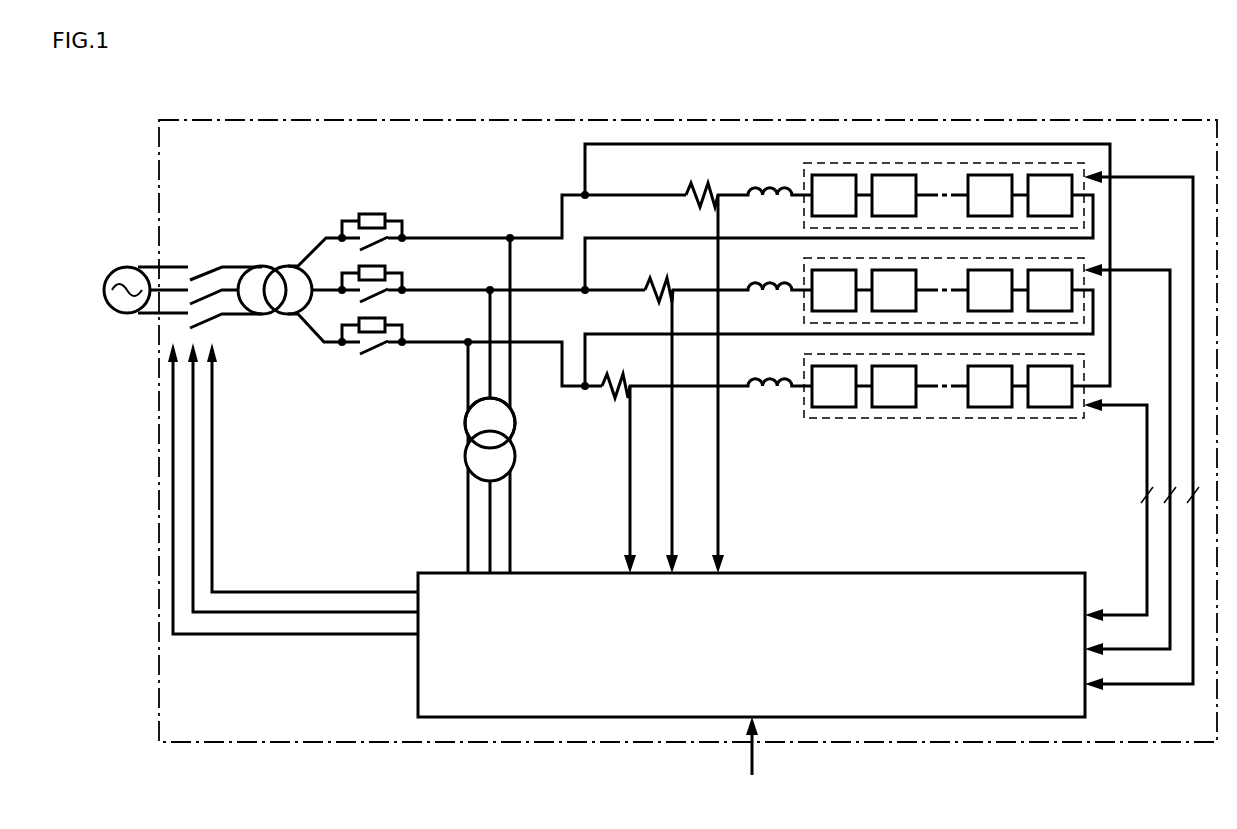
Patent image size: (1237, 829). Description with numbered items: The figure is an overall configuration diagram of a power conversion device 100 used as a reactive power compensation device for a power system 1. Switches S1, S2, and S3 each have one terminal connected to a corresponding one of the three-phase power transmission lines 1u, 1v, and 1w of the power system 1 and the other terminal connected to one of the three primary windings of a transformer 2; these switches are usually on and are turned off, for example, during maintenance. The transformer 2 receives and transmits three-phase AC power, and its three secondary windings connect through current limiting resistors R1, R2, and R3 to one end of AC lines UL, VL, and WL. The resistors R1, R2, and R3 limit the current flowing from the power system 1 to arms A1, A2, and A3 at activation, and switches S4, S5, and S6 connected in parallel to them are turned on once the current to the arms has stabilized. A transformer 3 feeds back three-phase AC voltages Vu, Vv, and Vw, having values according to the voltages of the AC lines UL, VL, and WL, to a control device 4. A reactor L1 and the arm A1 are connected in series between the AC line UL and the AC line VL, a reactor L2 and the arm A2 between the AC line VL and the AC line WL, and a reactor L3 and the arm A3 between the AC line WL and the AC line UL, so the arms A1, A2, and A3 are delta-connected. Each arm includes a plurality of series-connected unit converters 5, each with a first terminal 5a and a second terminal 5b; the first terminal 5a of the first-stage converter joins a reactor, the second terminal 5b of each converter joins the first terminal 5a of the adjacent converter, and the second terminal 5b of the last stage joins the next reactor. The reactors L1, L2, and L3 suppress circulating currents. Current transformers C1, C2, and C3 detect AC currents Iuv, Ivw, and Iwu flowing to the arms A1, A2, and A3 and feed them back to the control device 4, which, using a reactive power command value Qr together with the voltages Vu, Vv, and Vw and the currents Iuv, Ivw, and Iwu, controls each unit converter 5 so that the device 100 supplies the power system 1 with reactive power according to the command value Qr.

The power conversion device 100 is at (1114, 120).
The power system 1 is at (115, 270).
The three-phase power transmission line 1u is at (177, 267).
The three-phase power transmission line 1v is at (158, 293).
The three-phase power transmission line 1w is at (177, 315).
The switch S1 is at (204, 274).
The switch S2 is at (205, 300).
The switch S3 is at (212, 320).
The transformer 2 is at (258, 317).
The current limiting resistor R1 is at (372, 214).
The current limiting resistor R2 is at (359, 271).
The current limiting resistor R3 is at (359, 326).
The switch S4 is at (374, 245).
The switch S5 is at (374, 297).
The switch S6 is at (374, 349).
The AC line UL is at (531, 238).
The AC line VL is at (540, 290).
The AC line WL is at (549, 342).
The transformer 3 is at (466, 428).
The three-phase AC voltage Vu is at (512, 538).
The three-phase AC voltage Vv is at (488, 497).
The three-phase AC voltage Vw is at (468, 538).
The current transformer C1 is at (692, 192).
The current transformer C2 is at (647, 287).
The current transformer C3 is at (627, 380).
The reactor L1 is at (768, 187).
The reactor L2 is at (768, 282).
The reactor L3 is at (768, 378).
The arm A1 is at (804, 216).
The arm A2 is at (804, 311).
The arm A3 is at (804, 406).
The unit converter 5 is at (949, 320).
The first terminal 5a is at (812, 390).
The second terminal 5b is at (857, 390).
The AC current Iuv is at (718, 497).
The AC current Ivw is at (672, 455).
The AC current Iwu is at (630, 497).
The control device 4 is at (418, 690).
The reactive power command value Qr is at (753, 762).